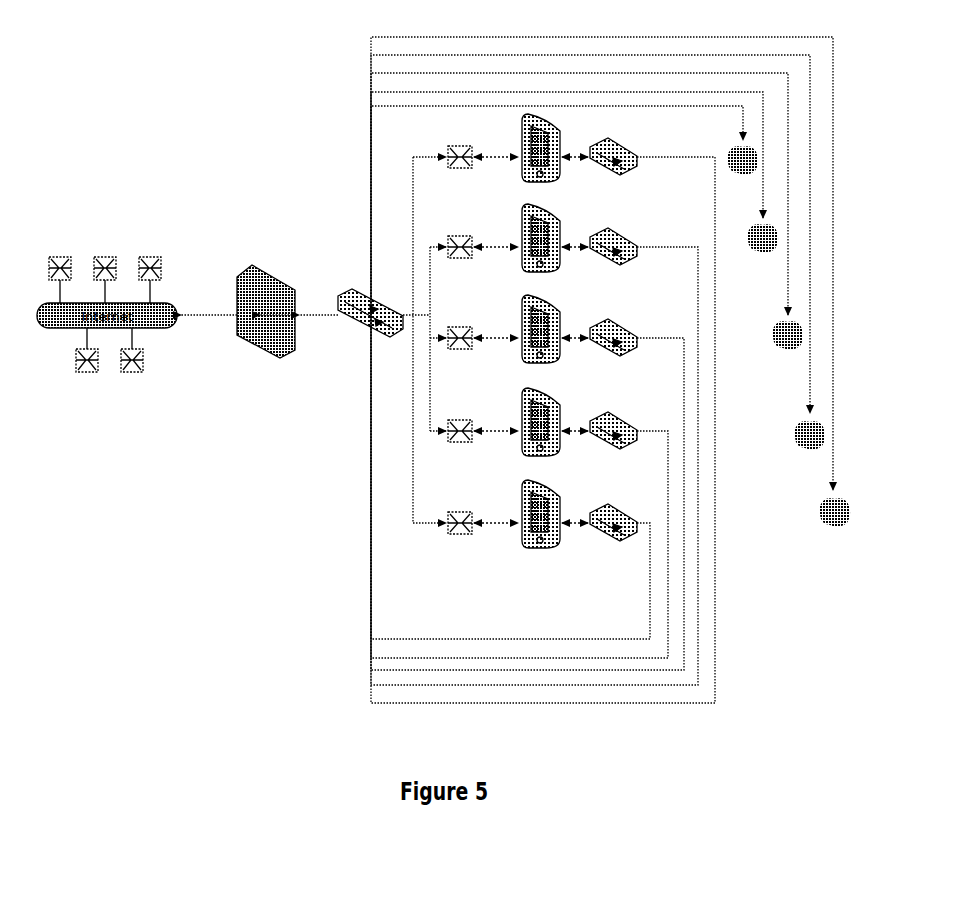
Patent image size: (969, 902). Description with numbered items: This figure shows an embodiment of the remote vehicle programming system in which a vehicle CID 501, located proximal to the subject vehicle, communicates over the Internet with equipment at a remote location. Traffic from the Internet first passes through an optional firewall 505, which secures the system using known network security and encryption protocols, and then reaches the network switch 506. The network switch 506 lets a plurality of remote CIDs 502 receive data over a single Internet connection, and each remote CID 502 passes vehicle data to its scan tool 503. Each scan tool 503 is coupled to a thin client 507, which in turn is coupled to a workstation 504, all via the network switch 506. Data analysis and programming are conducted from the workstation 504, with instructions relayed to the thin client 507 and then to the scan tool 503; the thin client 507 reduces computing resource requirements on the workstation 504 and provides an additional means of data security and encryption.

The vehicle CID 501 is at (58, 255).
The remote CID 502 is at (456, 146).
The scan tool 503 is at (564, 125).
The workstation 504 is at (815, 505).
The firewall 505 is at (231, 267).
The network switch 506 is at (359, 291).
The thin client 507 is at (628, 149).